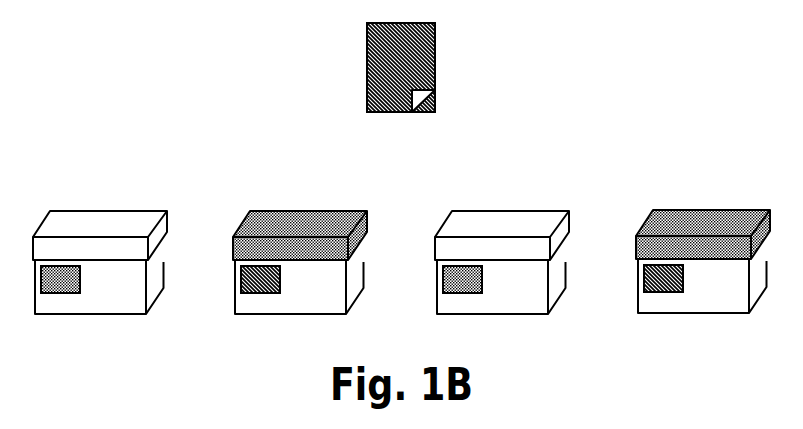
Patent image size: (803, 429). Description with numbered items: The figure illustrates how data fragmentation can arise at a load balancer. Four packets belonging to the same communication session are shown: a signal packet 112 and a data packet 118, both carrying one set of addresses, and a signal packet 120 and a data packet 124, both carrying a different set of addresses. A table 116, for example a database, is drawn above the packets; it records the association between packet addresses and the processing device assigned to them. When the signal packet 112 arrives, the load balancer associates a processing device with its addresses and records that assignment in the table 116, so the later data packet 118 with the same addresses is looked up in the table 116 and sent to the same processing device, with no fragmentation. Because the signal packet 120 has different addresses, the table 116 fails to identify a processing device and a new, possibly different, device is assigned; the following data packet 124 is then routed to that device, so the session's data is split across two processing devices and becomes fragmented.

The signal packet 112 is at (100, 236).
The table 116 is at (427, 47).
The data packet 118 is at (300, 235).
The signal packet 120 is at (502, 236).
The data packet 124 is at (703, 233).